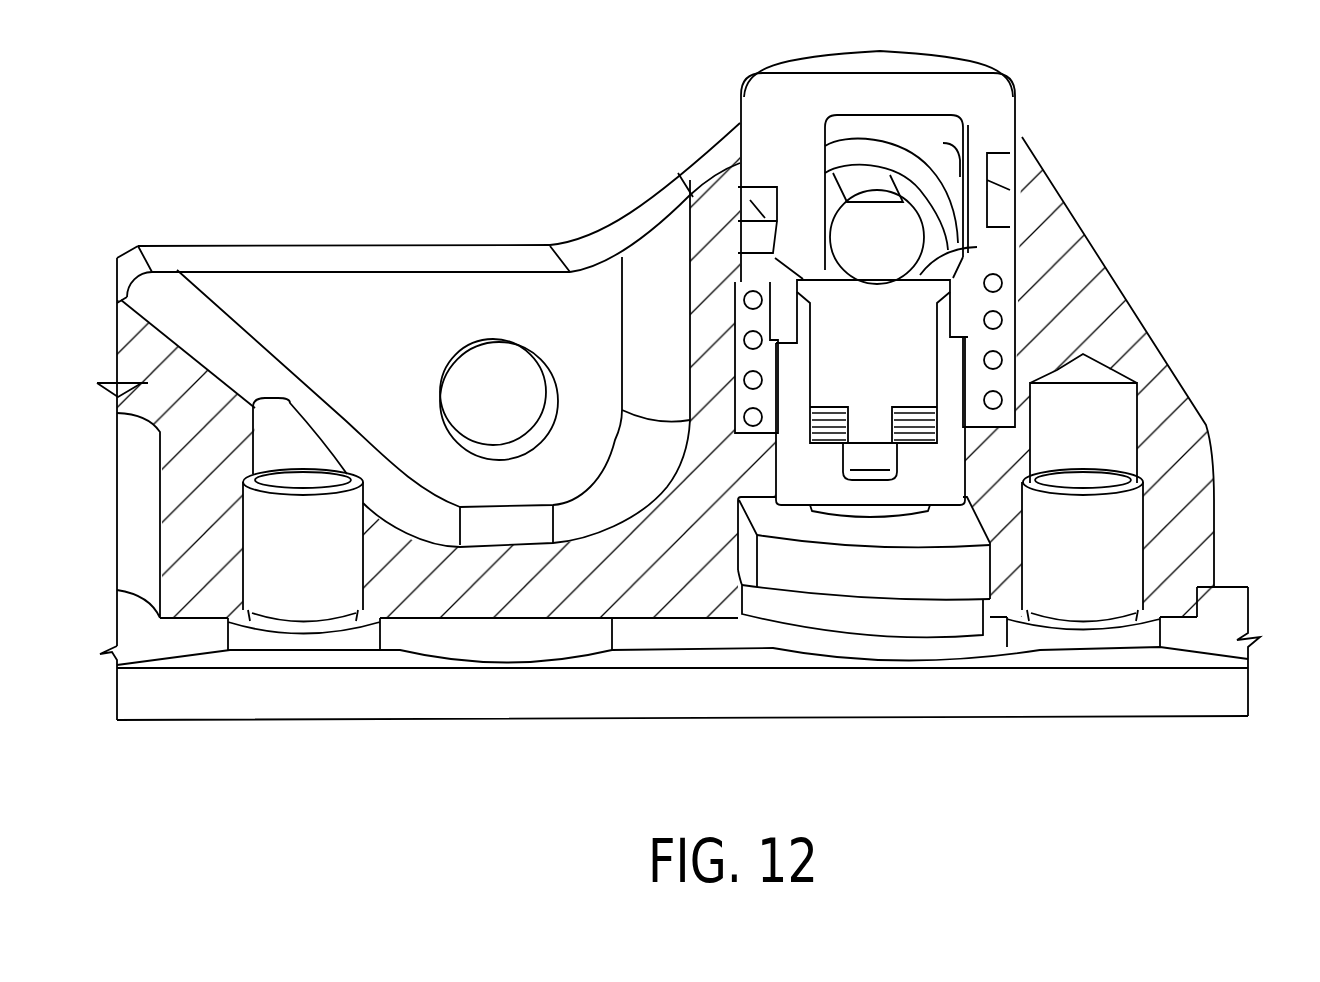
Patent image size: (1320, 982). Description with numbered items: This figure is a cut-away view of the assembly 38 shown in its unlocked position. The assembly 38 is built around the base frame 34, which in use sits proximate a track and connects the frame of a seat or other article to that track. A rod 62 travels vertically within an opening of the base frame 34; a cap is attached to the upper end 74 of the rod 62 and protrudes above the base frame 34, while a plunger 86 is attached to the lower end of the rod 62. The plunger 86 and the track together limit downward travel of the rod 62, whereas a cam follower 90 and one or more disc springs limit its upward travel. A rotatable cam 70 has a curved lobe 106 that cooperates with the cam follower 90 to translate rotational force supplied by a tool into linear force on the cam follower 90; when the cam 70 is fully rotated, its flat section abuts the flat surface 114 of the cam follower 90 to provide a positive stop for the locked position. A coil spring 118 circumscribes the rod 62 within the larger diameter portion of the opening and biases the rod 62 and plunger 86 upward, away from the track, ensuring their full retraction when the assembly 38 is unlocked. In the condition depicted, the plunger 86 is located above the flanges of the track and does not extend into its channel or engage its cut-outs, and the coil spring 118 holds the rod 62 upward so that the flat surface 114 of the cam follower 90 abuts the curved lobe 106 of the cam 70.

The base frame 34 is at (166, 242).
The assembly 38 is at (493, 138).
The rod 62 is at (787, 392).
The cam 70 is at (887, 223).
The upper end 74 is at (992, 93).
The plunger 86 is at (780, 617).
The cam follower 90 is at (903, 342).
The curved lobe 106 is at (744, 295).
The flat surface 114 is at (977, 247).
The coil spring 118 is at (665, 218).